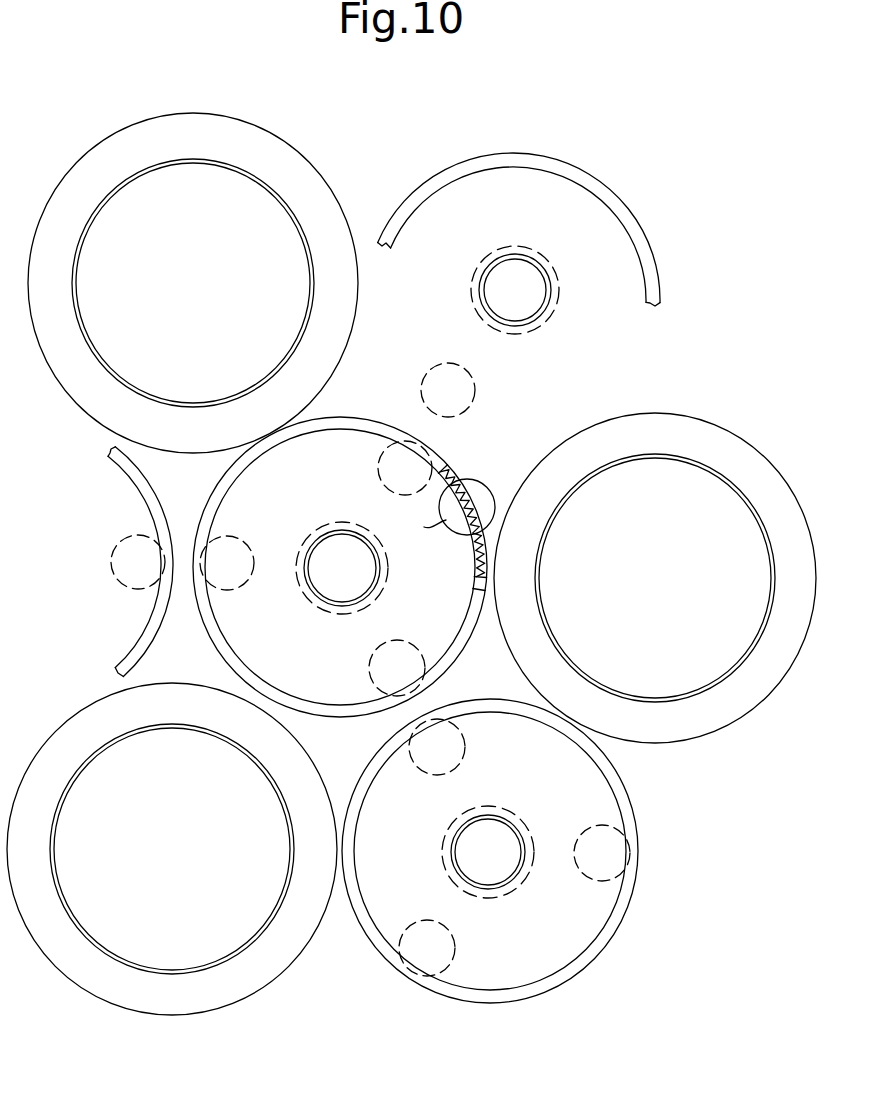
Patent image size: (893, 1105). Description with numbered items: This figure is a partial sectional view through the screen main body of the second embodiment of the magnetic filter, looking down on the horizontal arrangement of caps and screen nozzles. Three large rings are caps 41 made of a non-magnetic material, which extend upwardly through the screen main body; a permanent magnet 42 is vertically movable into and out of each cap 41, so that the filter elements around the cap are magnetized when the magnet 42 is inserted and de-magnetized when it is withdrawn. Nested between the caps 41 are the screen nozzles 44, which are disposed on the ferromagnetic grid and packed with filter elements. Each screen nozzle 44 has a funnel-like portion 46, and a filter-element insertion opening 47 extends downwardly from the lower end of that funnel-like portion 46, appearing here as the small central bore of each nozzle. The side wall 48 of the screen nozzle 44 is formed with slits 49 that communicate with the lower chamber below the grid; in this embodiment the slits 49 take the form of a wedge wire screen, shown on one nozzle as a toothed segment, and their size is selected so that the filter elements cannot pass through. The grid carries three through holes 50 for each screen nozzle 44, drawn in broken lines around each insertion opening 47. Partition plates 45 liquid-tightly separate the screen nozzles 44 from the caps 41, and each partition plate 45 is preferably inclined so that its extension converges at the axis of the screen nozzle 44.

The cap 41 is at (332, 188).
The permanent magnet 42 is at (253, 197).
The screen nozzle 44 is at (428, 585).
The partition plate 45 is at (502, 690).
The funnel-like portion 46 is at (593, 372).
The filter-element insertion opening 47 is at (512, 318).
The side wall 48 is at (483, 604).
The slits 49 is at (485, 563).
The through holes 50 is at (242, 540).